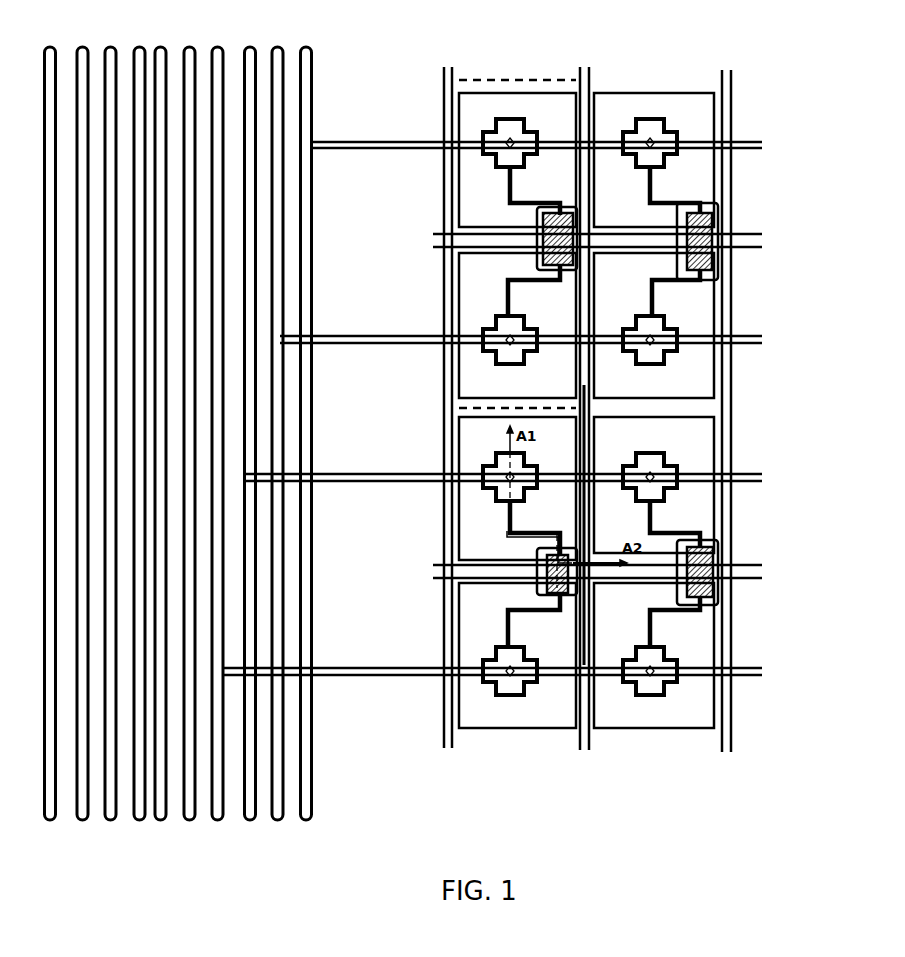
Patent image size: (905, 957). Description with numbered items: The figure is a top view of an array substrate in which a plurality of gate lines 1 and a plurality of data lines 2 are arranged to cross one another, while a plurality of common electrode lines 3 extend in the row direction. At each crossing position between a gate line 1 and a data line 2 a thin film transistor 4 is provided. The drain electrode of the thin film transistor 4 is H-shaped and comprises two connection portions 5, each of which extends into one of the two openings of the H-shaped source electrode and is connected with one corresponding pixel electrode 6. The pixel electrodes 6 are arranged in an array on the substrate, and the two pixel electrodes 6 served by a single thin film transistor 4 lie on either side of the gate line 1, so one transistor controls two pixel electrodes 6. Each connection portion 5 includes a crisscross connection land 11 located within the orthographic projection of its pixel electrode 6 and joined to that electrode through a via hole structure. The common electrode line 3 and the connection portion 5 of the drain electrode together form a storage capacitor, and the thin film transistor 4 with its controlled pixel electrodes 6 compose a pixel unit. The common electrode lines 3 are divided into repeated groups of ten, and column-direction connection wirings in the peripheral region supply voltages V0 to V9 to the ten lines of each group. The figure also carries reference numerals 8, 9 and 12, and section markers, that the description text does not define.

The gate line 1 is at (747, 233).
The data line 2 is at (716, 262).
The common electrode line 3 is at (468, 80).
The thin film transistor 4 is at (503, 92).
The connection portion 5 is at (655, 300).
The pixel electrode 6 is at (313, 242).
The drain electrode connection 8 is at (660, 178).
The gate line 9 is at (363, 140).
The crisscross connection land 11 is at (660, 123).
The data line 12 is at (732, 80).